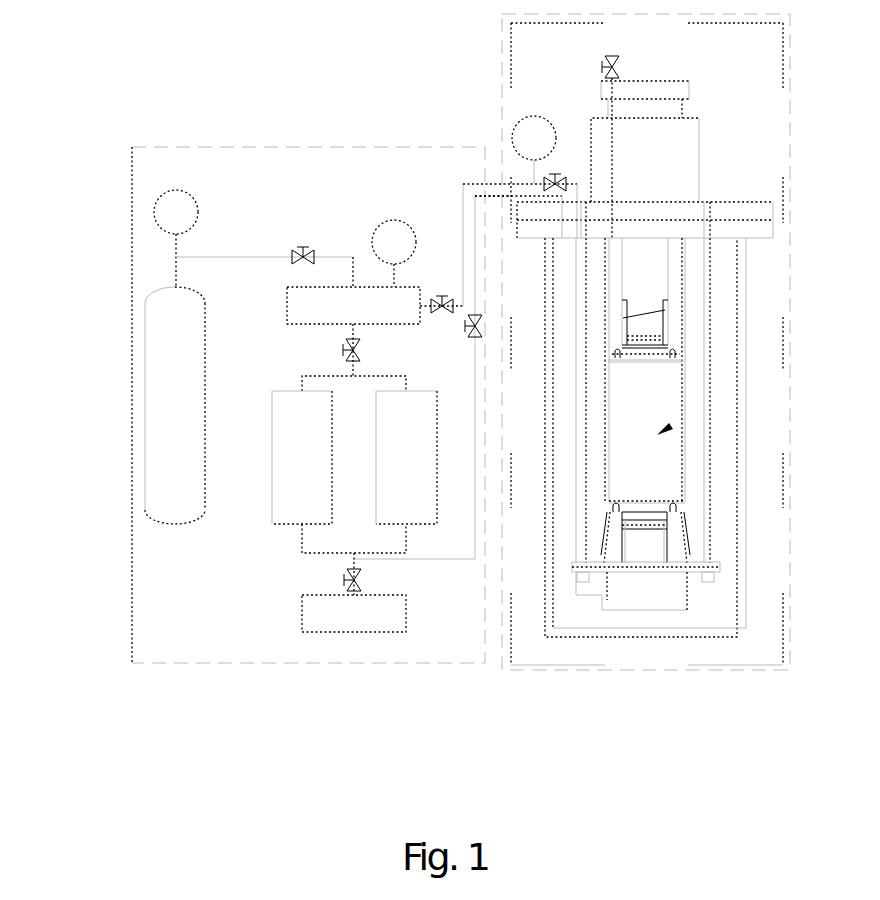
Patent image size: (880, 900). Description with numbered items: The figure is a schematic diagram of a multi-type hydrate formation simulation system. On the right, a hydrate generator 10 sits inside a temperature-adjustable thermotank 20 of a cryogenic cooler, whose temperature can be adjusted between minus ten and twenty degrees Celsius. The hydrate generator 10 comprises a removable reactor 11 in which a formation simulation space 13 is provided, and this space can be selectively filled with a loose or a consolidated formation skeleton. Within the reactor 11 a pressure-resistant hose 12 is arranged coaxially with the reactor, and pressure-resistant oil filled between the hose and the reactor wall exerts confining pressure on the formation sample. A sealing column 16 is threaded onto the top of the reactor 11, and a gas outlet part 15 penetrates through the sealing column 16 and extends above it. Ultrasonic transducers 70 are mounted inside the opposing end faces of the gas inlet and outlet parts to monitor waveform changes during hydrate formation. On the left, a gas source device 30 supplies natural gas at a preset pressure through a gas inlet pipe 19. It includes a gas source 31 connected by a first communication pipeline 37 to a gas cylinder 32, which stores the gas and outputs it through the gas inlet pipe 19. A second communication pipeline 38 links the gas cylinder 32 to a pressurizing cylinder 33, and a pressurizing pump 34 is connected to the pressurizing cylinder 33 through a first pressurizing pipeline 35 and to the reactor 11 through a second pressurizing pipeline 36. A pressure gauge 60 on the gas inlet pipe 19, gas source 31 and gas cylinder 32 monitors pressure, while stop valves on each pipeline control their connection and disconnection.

The hydrate generator 10 is at (700, 673).
The reactor 11 is at (745, 362).
The pressure-resistant hose 12 is at (685, 277).
The formation simulation space 13 is at (671, 426).
The gas outlet part 15 is at (690, 84).
The sealing column 16 is at (682, 160).
The gas inlet pipe 19 is at (470, 183).
The thermotank 20 is at (555, 663).
The gas source device 30 is at (295, 663).
The gas source 31 is at (160, 412).
The gas cylinder 32 is at (293, 305).
The pressurizing cylinder 33 is at (293, 430).
The pressurizing pump 34 is at (310, 617).
The first pressurizing pipeline 35 is at (303, 552).
The second pressurizing pipeline 36 is at (443, 563).
The first communication pipeline 37 is at (235, 258).
The second communication pipeline 38 is at (310, 373).
The pressure gauge 60 is at (163, 213).
The ultrasonic transducer 70 is at (660, 335).